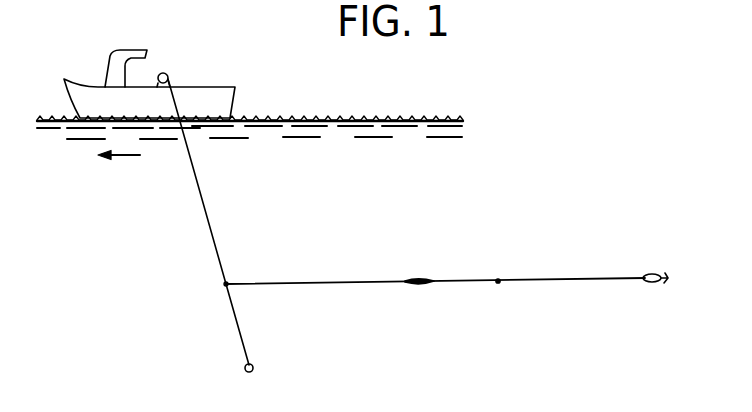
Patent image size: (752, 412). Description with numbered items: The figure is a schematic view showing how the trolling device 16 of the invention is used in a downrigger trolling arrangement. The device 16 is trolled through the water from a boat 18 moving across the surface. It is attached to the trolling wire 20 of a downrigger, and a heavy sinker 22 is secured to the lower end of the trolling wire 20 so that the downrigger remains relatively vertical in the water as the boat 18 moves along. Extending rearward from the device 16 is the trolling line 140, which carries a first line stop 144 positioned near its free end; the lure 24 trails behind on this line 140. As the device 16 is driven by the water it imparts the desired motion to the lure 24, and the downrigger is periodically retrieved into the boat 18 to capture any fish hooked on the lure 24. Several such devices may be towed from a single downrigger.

The boat 18 is at (195, 97).
The trolling wire 20 is at (208, 212).
The heavy sinker 22 is at (243, 366).
The trolling device 16 is at (412, 253).
The trolling line 140 is at (447, 281).
The first line stop 144 is at (498, 280).
The lure 24 is at (657, 273).